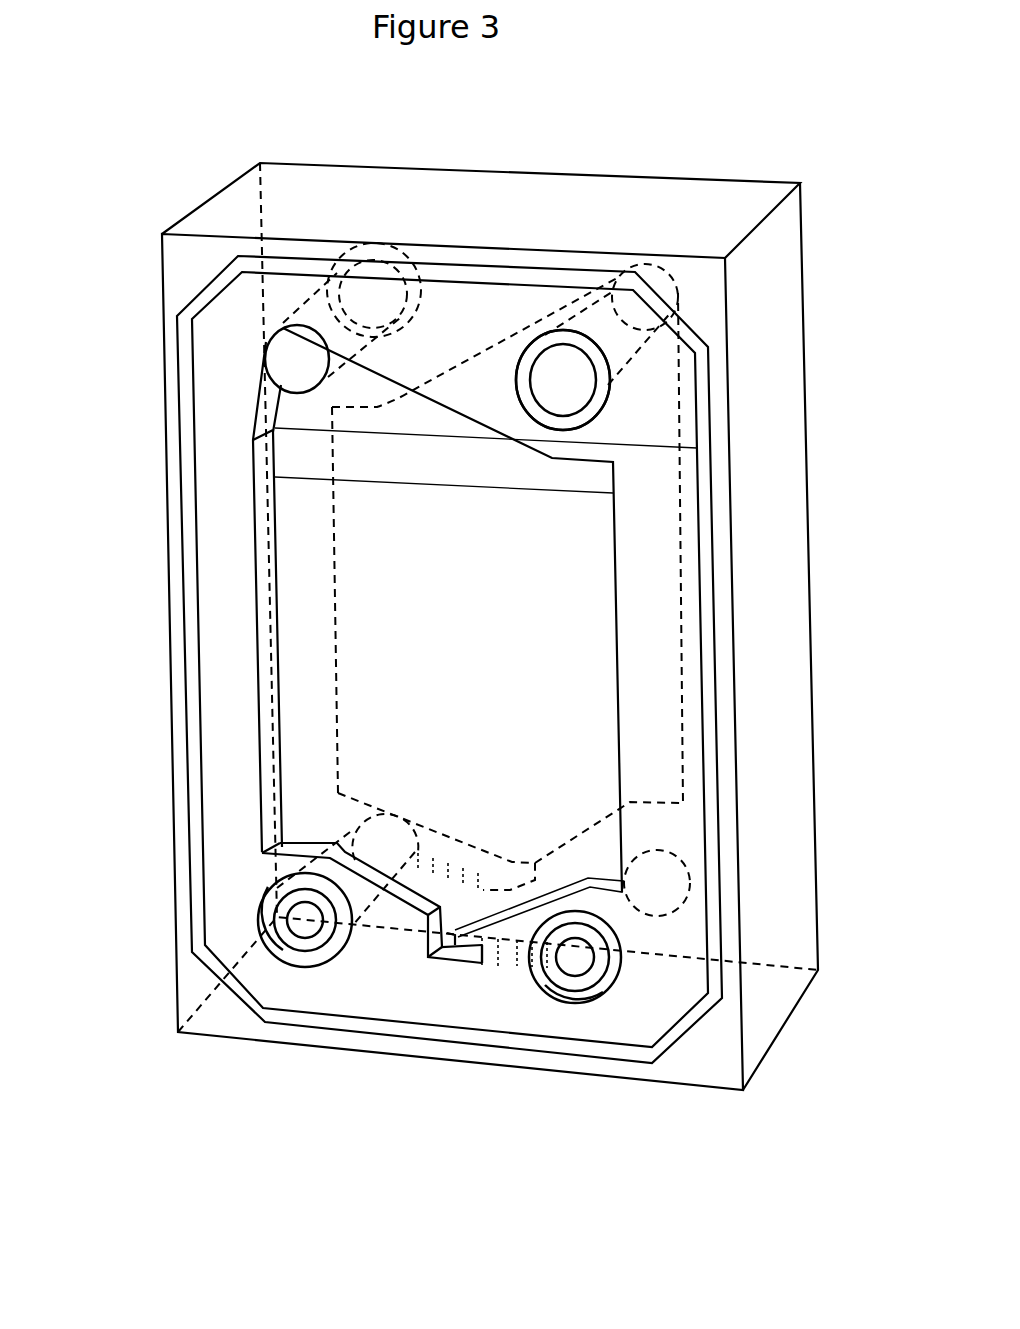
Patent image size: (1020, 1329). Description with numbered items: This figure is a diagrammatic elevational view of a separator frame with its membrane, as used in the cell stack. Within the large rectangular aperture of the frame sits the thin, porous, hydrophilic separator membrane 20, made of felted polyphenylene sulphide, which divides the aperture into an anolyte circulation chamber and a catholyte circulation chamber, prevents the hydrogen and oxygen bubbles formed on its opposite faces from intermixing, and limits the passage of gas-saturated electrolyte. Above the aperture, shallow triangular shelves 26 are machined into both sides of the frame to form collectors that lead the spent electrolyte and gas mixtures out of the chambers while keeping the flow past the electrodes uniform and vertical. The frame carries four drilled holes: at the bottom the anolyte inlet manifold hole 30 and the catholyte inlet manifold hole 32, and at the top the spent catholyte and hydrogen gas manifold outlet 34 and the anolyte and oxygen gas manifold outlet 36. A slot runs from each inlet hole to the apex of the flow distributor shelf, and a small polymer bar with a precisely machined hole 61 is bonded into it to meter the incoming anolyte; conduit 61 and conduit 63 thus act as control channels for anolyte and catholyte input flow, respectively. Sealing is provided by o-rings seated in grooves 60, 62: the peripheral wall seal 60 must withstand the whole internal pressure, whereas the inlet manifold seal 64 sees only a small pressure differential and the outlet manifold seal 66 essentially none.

The separator membrane 20 is at (443, 630).
The triangular shelves 26 is at (420, 426).
The anolyte inlet manifold hole 30 is at (580, 958).
The catholyte inlet manifold hole 32 is at (297, 921).
The spent catholyte and hydrogen gas manifold outlet 34 is at (570, 383).
The anolyte and oxygen gas manifold outlet 36 is at (280, 358).
The peripheral wall seal groove 60 is at (705, 425).
The anolyte input flow control conduit 61 is at (512, 960).
The o-ring groove 62 is at (597, 402).
The catholyte input flow control conduit 63 is at (603, 992).
The inlet manifold seal 64 is at (283, 950).
The outlet manifold seal 66 is at (587, 347).